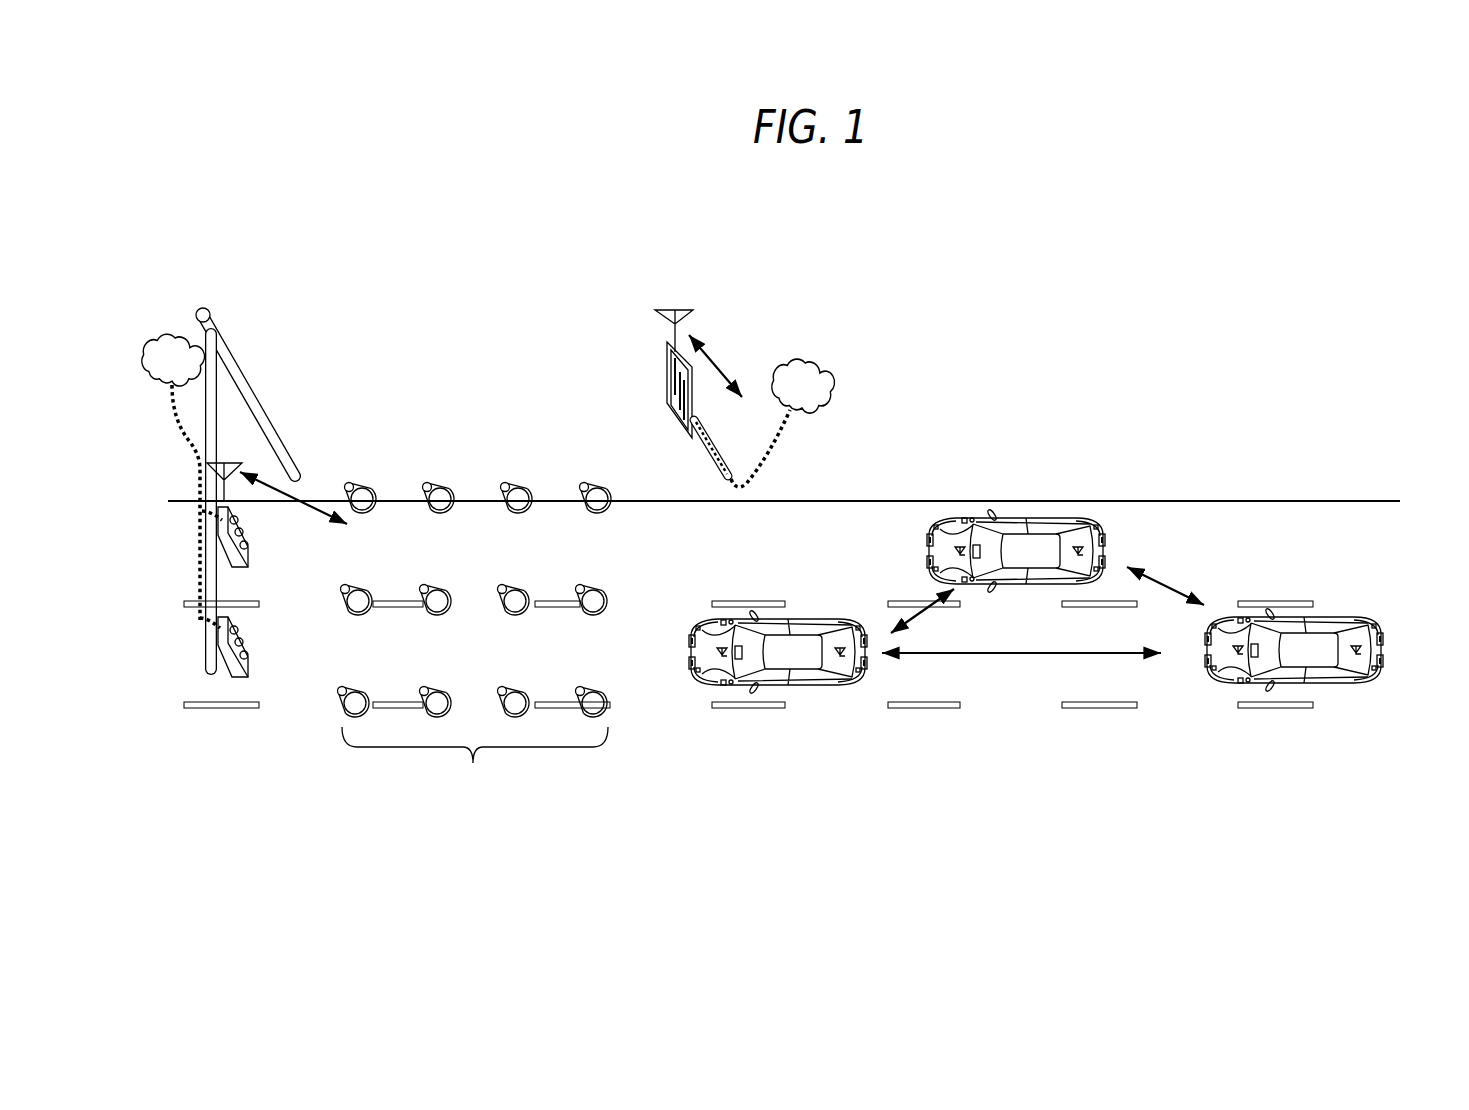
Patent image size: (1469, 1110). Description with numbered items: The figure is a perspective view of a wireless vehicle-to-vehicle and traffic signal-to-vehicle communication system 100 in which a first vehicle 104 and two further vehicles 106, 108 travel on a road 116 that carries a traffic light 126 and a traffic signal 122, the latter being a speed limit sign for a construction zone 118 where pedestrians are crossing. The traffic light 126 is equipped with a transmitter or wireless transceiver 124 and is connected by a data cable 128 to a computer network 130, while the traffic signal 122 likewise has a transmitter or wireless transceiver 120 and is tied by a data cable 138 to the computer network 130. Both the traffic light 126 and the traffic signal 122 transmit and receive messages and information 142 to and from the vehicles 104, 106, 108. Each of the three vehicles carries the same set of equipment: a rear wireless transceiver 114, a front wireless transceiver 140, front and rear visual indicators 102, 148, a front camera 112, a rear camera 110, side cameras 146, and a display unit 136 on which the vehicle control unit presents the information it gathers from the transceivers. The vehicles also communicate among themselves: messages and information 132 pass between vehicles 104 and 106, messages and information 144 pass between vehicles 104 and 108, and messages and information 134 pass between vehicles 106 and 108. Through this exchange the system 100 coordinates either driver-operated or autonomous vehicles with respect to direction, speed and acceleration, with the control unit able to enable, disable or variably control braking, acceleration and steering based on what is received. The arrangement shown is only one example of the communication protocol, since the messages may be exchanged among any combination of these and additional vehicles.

The vehicle-to-vehicle and traffic signal-to-vehicle communication system 100 is at (970, 267).
The front visual indicator 102 is at (857, 626).
The first vehicle 104 is at (787, 683).
The vehicle 106 is at (1305, 683).
The vehicle 108 is at (1042, 518).
The rear camera 110 is at (866, 657).
The front camera 112 is at (697, 634).
The rear wireless transceiver 114 is at (841, 657).
The road 116 is at (290, 667).
The construction zone 118 is at (475, 642).
The wireless transceiver 120 is at (684, 302).
The traffic signal 122 is at (667, 362).
The wireless transceiver 124 is at (229, 460).
The traffic light 126 is at (248, 545).
The data cable 128 is at (178, 427).
The computer network 130 is at (176, 338).
The messages and information 132 is at (1010, 655).
The messages and information 134 is at (1170, 582).
The display unit 136 is at (740, 660).
The data cable 138 is at (758, 477).
The front wireless transceiver 140 is at (719, 649).
The messages and information 142 is at (303, 497).
The messages and information 144 is at (913, 608).
The side camera 146 is at (731, 620).
The rear visual indicator 148 is at (722, 620).